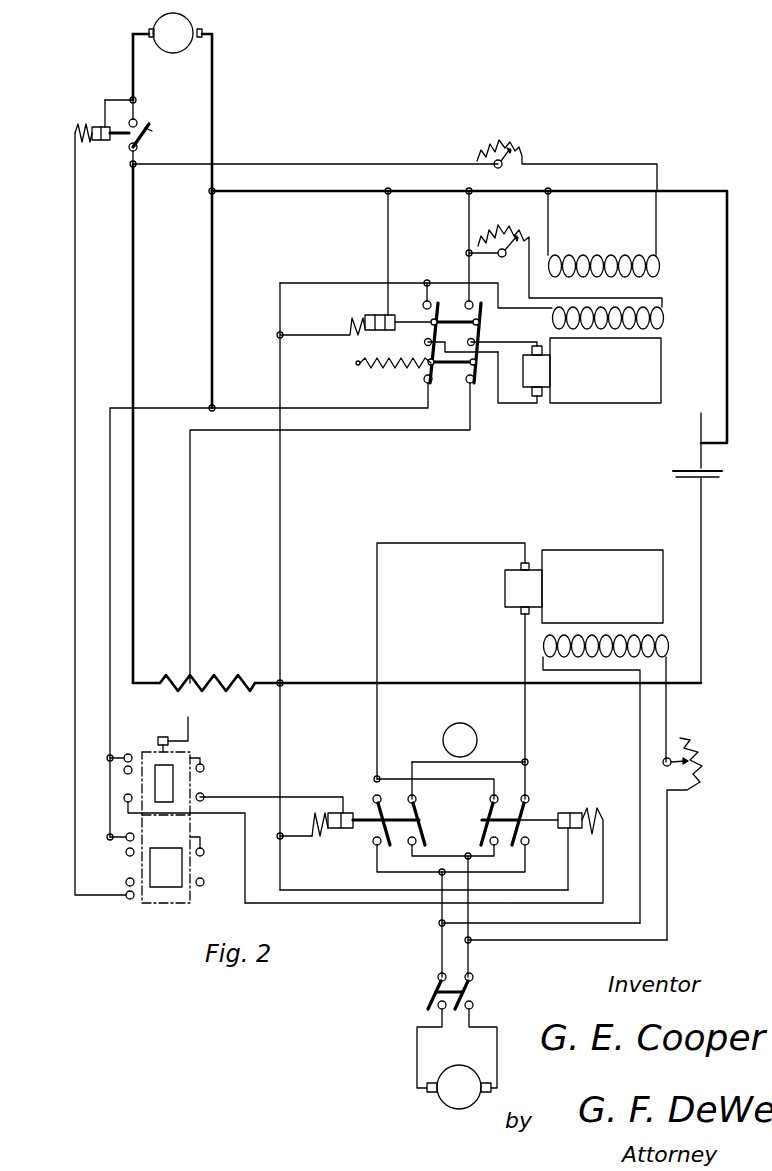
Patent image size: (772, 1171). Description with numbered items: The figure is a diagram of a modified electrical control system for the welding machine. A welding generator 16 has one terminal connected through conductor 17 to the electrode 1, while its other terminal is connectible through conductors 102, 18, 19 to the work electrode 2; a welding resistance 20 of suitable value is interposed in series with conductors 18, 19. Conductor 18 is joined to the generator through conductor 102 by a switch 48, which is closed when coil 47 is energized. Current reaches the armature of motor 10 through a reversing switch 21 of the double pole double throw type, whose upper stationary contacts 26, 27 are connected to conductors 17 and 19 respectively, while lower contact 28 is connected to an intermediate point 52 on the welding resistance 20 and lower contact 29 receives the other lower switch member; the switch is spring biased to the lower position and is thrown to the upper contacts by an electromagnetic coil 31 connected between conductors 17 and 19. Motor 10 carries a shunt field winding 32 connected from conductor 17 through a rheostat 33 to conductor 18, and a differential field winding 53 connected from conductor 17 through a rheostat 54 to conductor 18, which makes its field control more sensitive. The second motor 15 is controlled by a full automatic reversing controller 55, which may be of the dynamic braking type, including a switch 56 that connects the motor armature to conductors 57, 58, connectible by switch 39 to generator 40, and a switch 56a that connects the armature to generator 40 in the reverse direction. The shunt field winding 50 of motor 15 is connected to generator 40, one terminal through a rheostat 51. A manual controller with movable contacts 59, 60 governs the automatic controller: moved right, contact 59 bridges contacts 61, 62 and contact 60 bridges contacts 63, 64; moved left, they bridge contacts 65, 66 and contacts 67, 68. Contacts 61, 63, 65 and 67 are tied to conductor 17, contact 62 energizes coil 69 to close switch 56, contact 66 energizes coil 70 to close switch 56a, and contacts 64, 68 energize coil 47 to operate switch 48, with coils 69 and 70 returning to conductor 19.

The welding generator 16 is at (190, 22).
The conductor 102 is at (133, 68).
The coil 47 is at (78, 132).
The switch 48 is at (150, 130).
The conductor 18 is at (133, 277).
The conductor 17 is at (328, 191).
The rheostat 54 is at (522, 146).
The rheostat 33 is at (503, 225).
The differential field winding 53 is at (602, 255).
The shunt field winding 32 is at (664, 316).
The electromagnetic coil 31 is at (360, 315).
The stationary contact 27 is at (423, 304).
The stationary contact 26 is at (466, 303).
The reversing switch 21 is at (481, 333).
The stationary contact 29 is at (424, 378).
The stationary contact 28 is at (466, 378).
The motor 10 is at (605, 403).
The electrode 1 is at (703, 462).
The work electrode 2 is at (703, 494).
The motor 15 is at (594, 550).
The shunt field winding 50 is at (664, 644).
The welding resistance 20 is at (240, 678).
The intermediate point 52 is at (196, 676).
The conductor 19 is at (330, 682).
The automatic reversing controller 55 is at (460, 740).
The rheostat 51 is at (695, 742).
The switch 56 is at (408, 812).
The switch 56a is at (490, 806).
The coil 69 is at (316, 836).
The coil 70 is at (592, 810).
The conductor 57 is at (440, 943).
The conductor 58 is at (470, 962).
The switch 39 is at (474, 983).
The generator 40 is at (460, 1109).
The contact 59 is at (173, 785).
The contact 60 is at (182, 870).
The stationary contact 65 is at (124, 771).
The stationary contact 66 is at (124, 799).
The stationary contact 67 is at (126, 852).
The stationary contact 68 is at (127, 882).
The stationary contact 61 is at (203, 765).
The stationary contact 62 is at (204, 795).
The stationary contact 63 is at (203, 849).
The stationary contact 64 is at (204, 883).